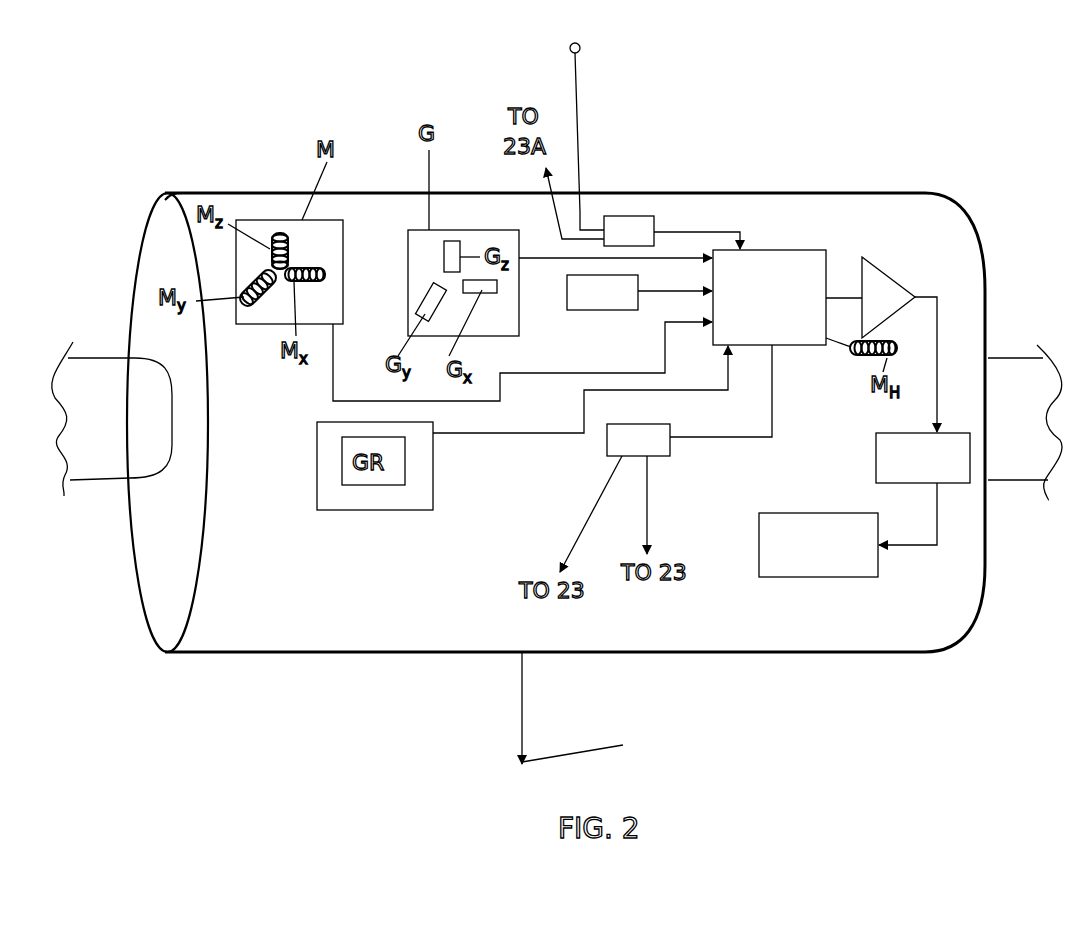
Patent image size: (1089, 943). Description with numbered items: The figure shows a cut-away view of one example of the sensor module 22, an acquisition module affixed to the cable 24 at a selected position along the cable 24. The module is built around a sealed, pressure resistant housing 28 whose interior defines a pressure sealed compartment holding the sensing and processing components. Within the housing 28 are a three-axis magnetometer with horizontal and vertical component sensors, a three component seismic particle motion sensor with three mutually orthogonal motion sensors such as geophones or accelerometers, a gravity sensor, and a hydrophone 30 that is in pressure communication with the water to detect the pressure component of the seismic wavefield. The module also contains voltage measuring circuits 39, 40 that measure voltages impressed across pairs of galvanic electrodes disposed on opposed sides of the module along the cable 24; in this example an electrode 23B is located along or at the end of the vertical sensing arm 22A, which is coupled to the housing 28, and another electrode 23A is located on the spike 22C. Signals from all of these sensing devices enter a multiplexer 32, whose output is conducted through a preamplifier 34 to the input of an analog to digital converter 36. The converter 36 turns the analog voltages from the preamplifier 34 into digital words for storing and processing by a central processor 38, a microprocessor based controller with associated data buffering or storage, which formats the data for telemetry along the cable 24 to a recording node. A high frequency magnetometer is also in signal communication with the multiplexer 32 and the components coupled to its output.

The sensor module 22 is at (796, 122).
The vertical sensing arm 22A is at (578, 115).
The spike 22C is at (518, 677).
The electrode 23A is at (599, 747).
The electrode 23B is at (592, 29).
The cable 24 is at (112, 448).
The housing 28 is at (183, 193).
The hydrophone 30 is at (593, 300).
The multiplexer 32 is at (797, 250).
The preamplifier 34 is at (897, 283).
The analog to digital converter 36 is at (876, 465).
The central processor 38 is at (790, 578).
The voltage measuring circuit 39 is at (658, 457).
The voltage measuring circuit 40 is at (636, 215).